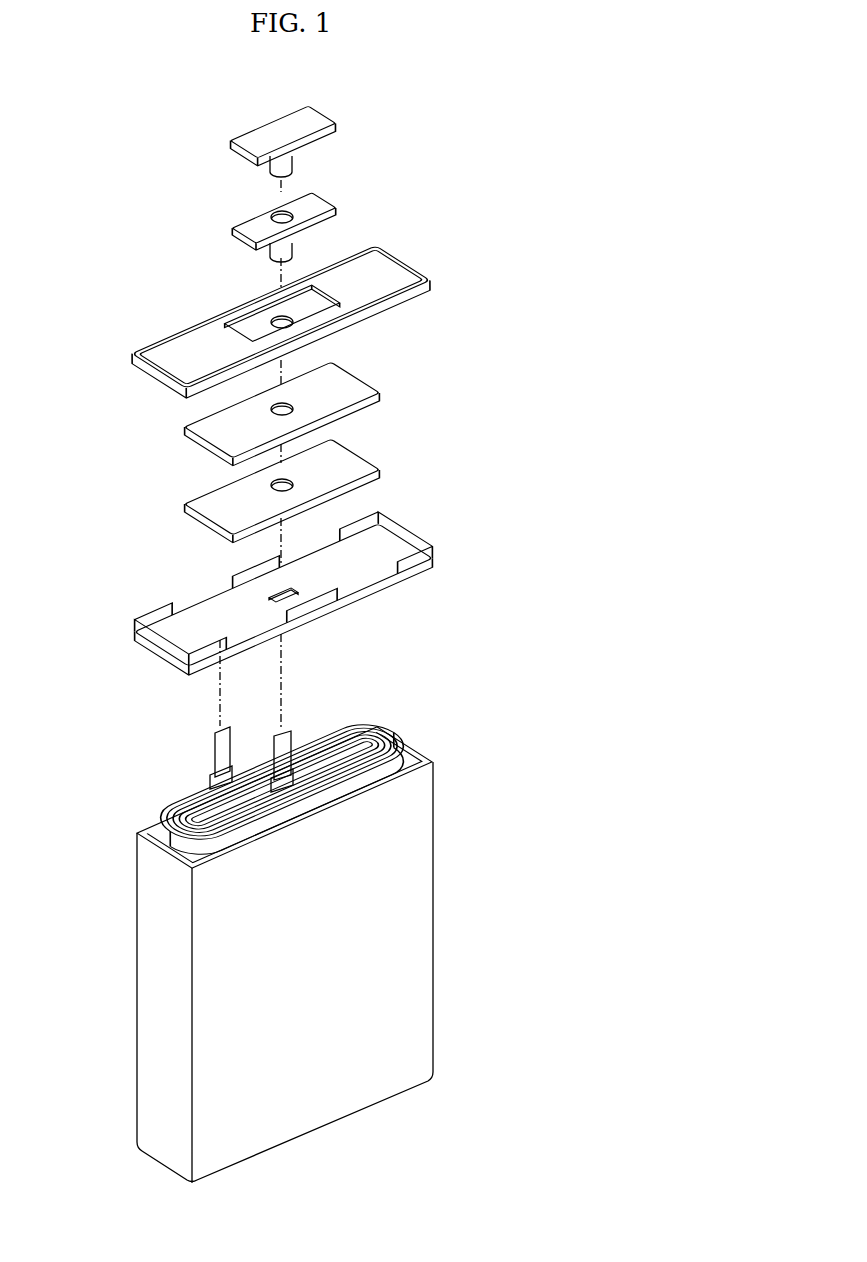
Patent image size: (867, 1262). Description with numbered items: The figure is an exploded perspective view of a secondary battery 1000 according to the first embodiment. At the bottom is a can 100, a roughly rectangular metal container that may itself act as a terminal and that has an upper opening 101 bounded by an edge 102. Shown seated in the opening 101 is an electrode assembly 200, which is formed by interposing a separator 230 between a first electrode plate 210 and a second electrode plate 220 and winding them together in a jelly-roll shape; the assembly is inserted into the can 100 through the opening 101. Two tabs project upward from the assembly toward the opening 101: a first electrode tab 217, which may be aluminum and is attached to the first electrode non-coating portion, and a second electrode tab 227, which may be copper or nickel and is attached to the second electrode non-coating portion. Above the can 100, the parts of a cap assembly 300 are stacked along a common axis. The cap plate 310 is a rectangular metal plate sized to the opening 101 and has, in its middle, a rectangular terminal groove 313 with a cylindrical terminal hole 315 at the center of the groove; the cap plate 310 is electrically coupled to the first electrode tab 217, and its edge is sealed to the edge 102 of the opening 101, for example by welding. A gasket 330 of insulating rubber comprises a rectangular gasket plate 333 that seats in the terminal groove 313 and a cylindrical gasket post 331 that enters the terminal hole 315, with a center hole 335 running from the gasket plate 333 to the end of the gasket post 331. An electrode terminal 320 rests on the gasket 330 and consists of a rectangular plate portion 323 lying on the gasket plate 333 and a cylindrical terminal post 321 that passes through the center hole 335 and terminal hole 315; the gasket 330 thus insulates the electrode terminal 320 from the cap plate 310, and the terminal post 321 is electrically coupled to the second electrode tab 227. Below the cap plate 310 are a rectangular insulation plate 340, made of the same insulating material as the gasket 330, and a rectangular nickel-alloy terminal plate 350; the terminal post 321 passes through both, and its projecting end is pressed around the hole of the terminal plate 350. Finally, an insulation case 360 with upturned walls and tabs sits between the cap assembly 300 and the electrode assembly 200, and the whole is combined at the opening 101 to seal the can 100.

The secondary battery 1000 is at (139, 149).
The can 100 is at (450, 880).
The opening 101 is at (420, 752).
The edge of the upper opening 102 is at (436, 756).
The electrode assembly 200 is at (150, 800).
The first electrode plate 210 is at (396, 736).
The first electrode tab 217 is at (212, 742).
The second electrode plate 220 is at (360, 738).
The second electrode tab 227 is at (273, 740).
The separator 230 is at (375, 737).
The cap assembly 300 is at (428, 204).
The cap plate 310 is at (177, 341).
The terminal groove 313 is at (282, 315).
The terminal hole 315 is at (270, 315).
The electrode terminal 320 is at (390, 92).
The terminal post 321 is at (287, 160).
The plate portion 323 is at (320, 121).
The gasket 330 is at (172, 188).
The gasket post 331 is at (273, 257).
The gasket plate 333 is at (258, 219).
The center hole 335 is at (294, 211).
The insulation plate 340 is at (342, 380).
The terminal plate 350 is at (350, 462).
The insulation case 360 is at (138, 630).